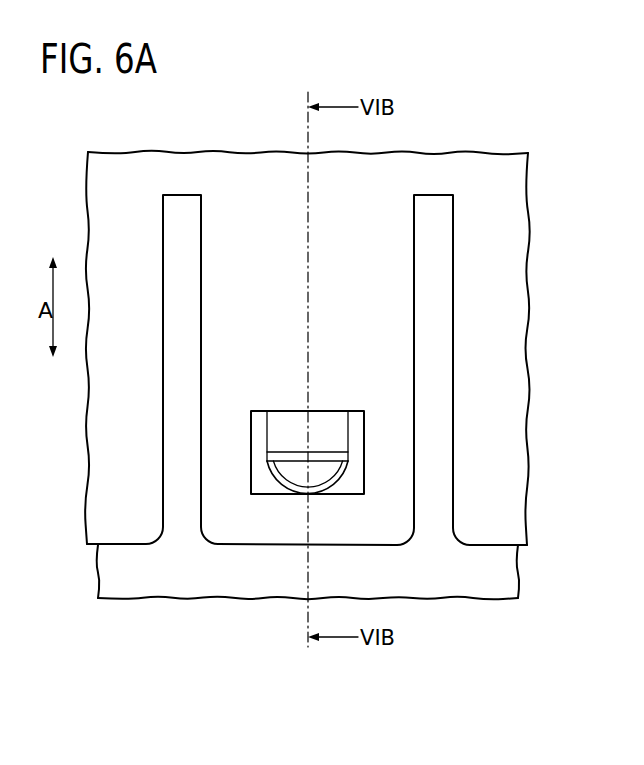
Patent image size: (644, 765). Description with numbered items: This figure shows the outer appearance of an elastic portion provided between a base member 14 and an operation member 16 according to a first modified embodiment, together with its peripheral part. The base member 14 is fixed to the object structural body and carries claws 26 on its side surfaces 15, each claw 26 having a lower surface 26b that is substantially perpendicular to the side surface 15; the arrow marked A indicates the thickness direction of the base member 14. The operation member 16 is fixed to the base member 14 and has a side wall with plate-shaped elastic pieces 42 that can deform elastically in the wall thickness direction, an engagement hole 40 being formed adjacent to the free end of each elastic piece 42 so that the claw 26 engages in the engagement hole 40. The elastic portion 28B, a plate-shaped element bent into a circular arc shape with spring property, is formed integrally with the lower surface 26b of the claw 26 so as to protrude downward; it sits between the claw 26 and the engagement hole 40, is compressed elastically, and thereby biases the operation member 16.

The base member 14 is at (446, 586).
The side surface 15 is at (505, 567).
The operation member 16 is at (502, 297).
The claw 26 is at (328, 425).
The lower surface 26b is at (322, 463).
The elastic portion 28B is at (283, 480).
The engagement hole 40 is at (348, 494).
The elastic piece 42 is at (395, 424).